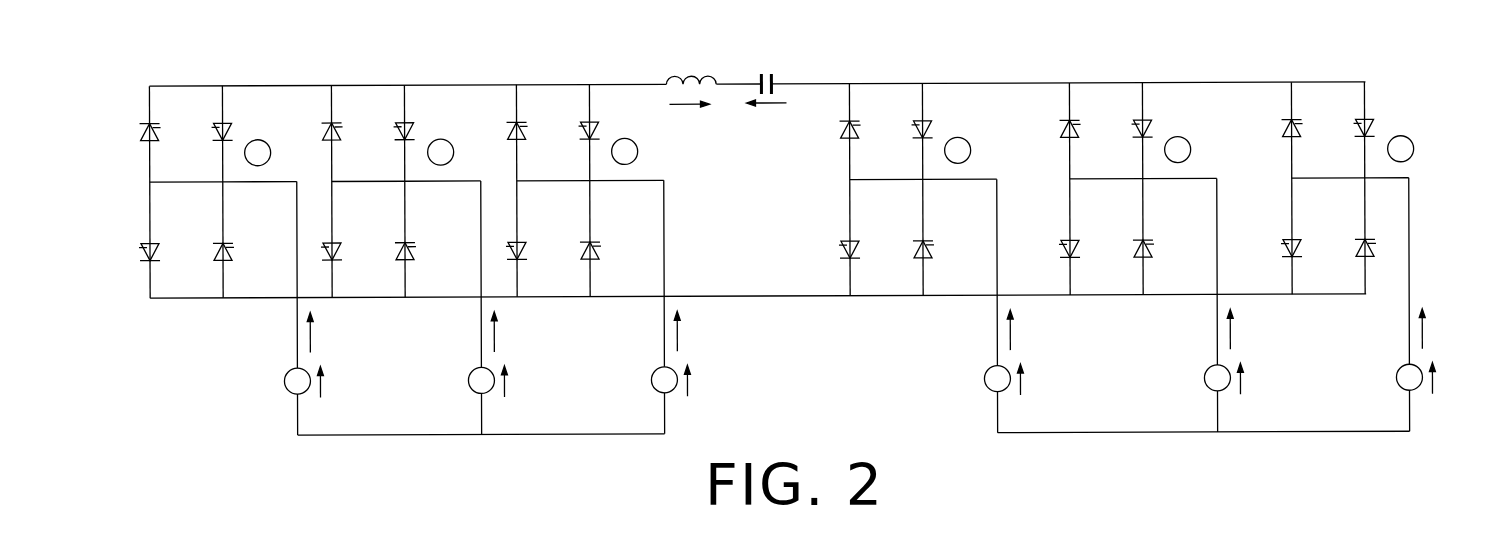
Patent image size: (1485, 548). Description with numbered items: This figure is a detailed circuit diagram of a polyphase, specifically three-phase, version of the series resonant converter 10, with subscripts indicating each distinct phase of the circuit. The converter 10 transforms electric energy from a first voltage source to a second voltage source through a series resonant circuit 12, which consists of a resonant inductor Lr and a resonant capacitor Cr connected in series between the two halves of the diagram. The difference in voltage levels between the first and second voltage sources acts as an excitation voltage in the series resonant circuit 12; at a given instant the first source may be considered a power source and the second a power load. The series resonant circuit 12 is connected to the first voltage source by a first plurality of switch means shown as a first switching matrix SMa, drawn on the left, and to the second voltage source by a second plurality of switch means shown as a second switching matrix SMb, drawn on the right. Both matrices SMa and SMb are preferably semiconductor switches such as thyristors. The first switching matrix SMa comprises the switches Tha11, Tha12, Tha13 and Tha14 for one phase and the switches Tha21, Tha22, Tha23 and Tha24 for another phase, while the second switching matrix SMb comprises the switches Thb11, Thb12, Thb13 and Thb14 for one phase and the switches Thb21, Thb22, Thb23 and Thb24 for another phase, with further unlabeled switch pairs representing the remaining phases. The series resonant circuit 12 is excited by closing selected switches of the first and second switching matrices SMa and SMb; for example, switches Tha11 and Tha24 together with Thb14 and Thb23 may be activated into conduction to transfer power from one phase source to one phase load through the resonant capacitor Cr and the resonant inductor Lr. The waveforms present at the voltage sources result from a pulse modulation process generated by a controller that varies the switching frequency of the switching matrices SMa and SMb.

The series resonant converter 10 is at (802, 221).
The series resonant circuit 12 is at (726, 141).
The first switching matrix SMa is at (414, 240).
The second switching matrix SMb is at (1136, 240).
The resonant inductor Lr is at (691, 64).
The resonant capacitor Cr is at (767, 69).
The switch Tha11 is at (169, 124).
The switch Tha12 is at (168, 244).
The switch Tha13 is at (241, 124).
The switch Tha14 is at (242, 244).
The switch Tha21 is at (351, 123).
The switch Tha22 is at (351, 243).
The switch Tha23 is at (423, 123).
The switch Tha24 is at (425, 243).
The switch Thb11 is at (869, 242).
The switch Thb12 is at (868, 122).
The switch Thb13 is at (943, 241).
The switch Thb14 is at (941, 121).
The switch Thb21 is at (1089, 241).
The switch Thb22 is at (1089, 121).
The switch Thb23 is at (1163, 240).
The switch Thb24 is at (1161, 120).